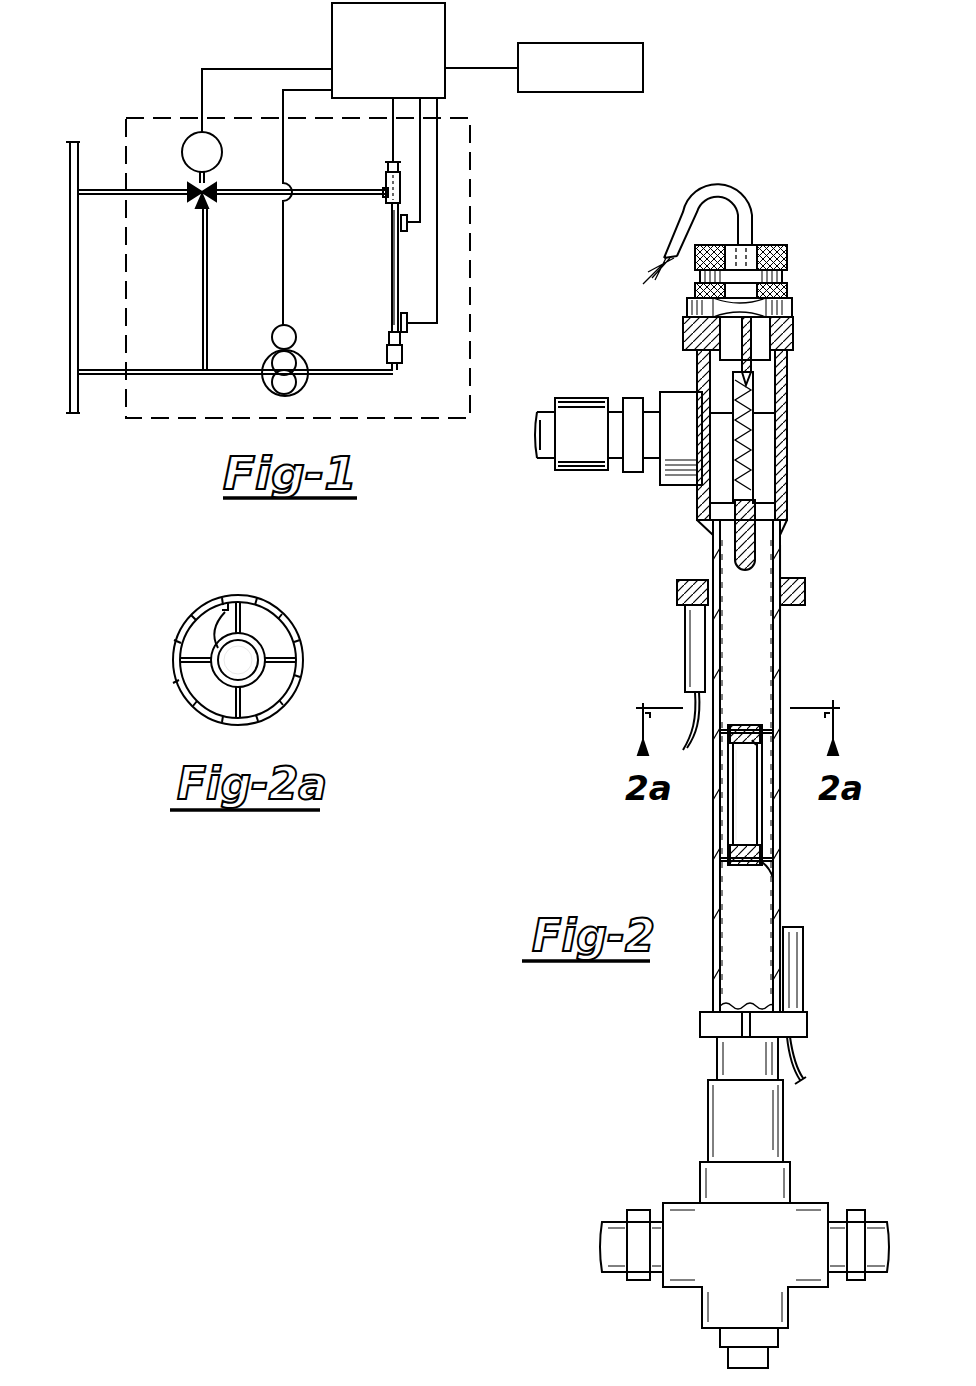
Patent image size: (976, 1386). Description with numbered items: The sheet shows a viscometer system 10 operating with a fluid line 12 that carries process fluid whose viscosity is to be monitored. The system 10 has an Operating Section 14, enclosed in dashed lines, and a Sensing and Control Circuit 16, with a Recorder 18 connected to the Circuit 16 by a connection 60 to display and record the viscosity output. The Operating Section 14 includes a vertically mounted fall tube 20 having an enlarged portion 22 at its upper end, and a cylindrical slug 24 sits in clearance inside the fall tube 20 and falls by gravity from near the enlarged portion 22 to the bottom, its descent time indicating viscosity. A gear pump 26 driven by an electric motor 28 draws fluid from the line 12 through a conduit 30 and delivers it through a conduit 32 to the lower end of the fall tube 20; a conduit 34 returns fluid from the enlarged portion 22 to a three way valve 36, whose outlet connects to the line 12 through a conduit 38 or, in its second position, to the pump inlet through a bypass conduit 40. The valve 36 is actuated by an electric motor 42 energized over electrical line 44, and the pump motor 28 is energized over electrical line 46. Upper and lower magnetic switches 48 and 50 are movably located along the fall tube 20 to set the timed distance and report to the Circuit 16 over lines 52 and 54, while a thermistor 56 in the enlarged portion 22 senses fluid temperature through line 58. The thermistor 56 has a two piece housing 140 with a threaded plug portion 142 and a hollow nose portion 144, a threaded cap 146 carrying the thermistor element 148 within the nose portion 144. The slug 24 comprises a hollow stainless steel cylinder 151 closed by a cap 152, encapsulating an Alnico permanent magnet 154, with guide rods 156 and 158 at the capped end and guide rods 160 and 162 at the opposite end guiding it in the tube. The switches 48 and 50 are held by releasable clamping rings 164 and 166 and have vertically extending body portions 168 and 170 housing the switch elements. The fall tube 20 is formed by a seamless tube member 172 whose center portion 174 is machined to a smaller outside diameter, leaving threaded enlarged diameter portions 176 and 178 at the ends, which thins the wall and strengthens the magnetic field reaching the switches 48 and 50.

In FIG. 1, the viscometer system 10 is at (500, 270).
In FIG. 1, the fluid line 12 is at (70, 228).
In FIG. 1, the Operating Section 14 is at (475, 372).
In FIG. 1, the Sensing and Control Circuit 16 is at (448, 20).
In FIG. 1, the Recorder 18 is at (643, 68).
In FIG. 1, the fall tube 20 is at (392, 262).
In FIG. 2A, the fall tube 20 is at (300, 638).
In FIG. 2, the fall tube 20 is at (781, 662).
In FIG. 1, the enlarged portion 22 is at (400, 185).
In FIG. 2, the enlarged portion 22 is at (785, 432).
In FIG. 1, the cylindrical slug 24 is at (390, 208).
In FIG. 2A, the cylindrical slug 24 is at (275, 690).
In FIG. 2, the cylindrical slug 24 is at (770, 835).
In FIG. 1, the gear pump 26 is at (305, 388).
In FIG. 1, the electric motor 28 is at (295, 333).
In FIG. 1, the conduit 30 is at (176, 338).
In FIG. 1, the conduit 32 is at (380, 372).
In FIG. 2, the conduit 32 is at (612, 1232).
In FIG. 1, the conduit 34 is at (313, 195).
In FIG. 1, the three way valve 36 is at (196, 204).
In FIG. 1, the conduit 38 is at (97, 190).
In FIG. 1, the bypass conduit 40 is at (203, 276).
In FIG. 1, the electric motor 42 is at (222, 150).
In FIG. 1, the electrical line 44 is at (250, 69).
In FIG. 1, the electrical line 46 is at (283, 253).
In FIG. 1, the upper magnetic switch 48 is at (404, 232).
In FIG. 2, the upper magnetic switch 48 is at (675, 592).
In FIG. 1, the lower magnetic switch 50 is at (440, 326).
In FIG. 2, the lower magnetic switch 50 is at (682, 1032).
In FIG. 1, the line 52 is at (425, 200).
In FIG. 2, the line 52 is at (690, 700).
In FIG. 1, the line 54 is at (440, 243).
In FIG. 2, the line 54 is at (805, 1063).
In FIG. 1, the thermistor 56 is at (388, 168).
In FIG. 2, the thermistor 56 is at (752, 345).
In FIG. 1, the line 58 is at (393, 131).
In FIG. 2, the line 58 is at (692, 183).
In FIG. 1, the recorder line 60 is at (485, 68).
In FIG. 2, the housing 140 is at (790, 388).
In FIG. 2, the plug portion 142 is at (752, 355).
In FIG. 2, the nose portion 144 is at (753, 523).
In FIG. 2, the threaded cap 146 is at (790, 290).
In FIG. 2, the thermistor element 148 is at (745, 478).
In FIG. 2A, the hollow stainless steel cylinder 151 is at (222, 612).
In FIG. 2, the hollow stainless steel cylinder 151 is at (727, 805).
In FIG. 2A, the cap 152 is at (245, 650).
In FIG. 2, the cap 152 is at (745, 725).
In FIG. 2, the Alnico permanent magnet 154 is at (745, 802).
In FIG. 2A, the guide rod 156 is at (200, 668).
In FIG. 2, the guide rod 156 is at (758, 745).
In FIG. 2A, the guide rod 158 is at (230, 602).
In FIG. 2, the guide rod 158 is at (758, 752).
In FIG. 2, the guide rod 160 is at (775, 870).
In FIG. 2, the guide rod 162 is at (732, 853).
In FIG. 2, the releasable clamping ring 164 is at (686, 580).
In FIG. 2, the releasable clamping ring 166 is at (795, 1020).
In FIG. 2, the body portion 168 is at (686, 643).
In FIG. 2, the body portion 170 is at (803, 945).
In FIG. 2A, the tube member 172 is at (312, 656).
In FIG. 2, the tube member 172 is at (784, 912).
In FIG. 2A, the center portion 174 is at (265, 720).
In FIG. 2, the center portion 174 is at (781, 628).
In FIG. 2, the enlarged diameter portion 176 is at (762, 1124).
In FIG. 2, the enlarged diameter portion 178 is at (783, 535).